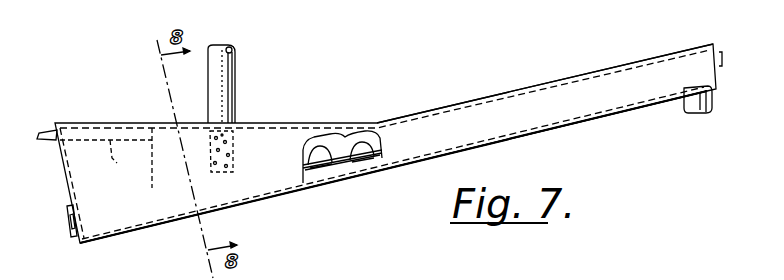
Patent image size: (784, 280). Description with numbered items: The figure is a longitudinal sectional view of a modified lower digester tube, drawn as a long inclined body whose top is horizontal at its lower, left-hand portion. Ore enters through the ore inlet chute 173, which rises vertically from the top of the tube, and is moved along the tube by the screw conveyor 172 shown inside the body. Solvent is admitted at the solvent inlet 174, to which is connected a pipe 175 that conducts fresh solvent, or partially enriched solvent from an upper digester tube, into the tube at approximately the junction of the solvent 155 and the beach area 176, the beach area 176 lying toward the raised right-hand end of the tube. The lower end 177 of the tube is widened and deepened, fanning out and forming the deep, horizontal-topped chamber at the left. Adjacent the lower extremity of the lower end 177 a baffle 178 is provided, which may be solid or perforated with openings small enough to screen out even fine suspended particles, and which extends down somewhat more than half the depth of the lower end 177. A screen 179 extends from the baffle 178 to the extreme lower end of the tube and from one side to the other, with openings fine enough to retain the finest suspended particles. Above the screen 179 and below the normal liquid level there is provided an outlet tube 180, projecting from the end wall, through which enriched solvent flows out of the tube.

The solvent 155 is at (275, 138).
The screw conveyor 172 is at (358, 165).
The ore inlet chute 173 is at (228, 78).
The solvent inlet 174 is at (340, 170).
The pipe 175 is at (338, 127).
The beach area 176 is at (600, 112).
The lower end 177 is at (162, 227).
The baffle 178 is at (152, 178).
The screen 179 is at (106, 158).
The outlet tube 180 is at (46, 145).